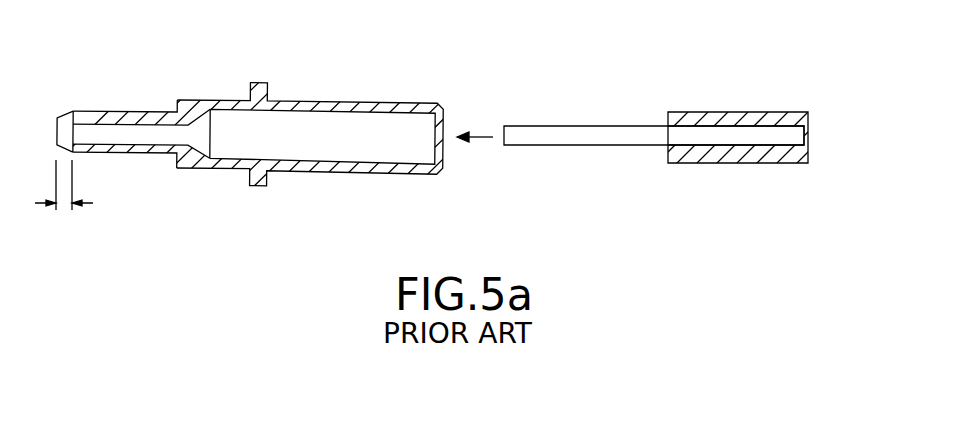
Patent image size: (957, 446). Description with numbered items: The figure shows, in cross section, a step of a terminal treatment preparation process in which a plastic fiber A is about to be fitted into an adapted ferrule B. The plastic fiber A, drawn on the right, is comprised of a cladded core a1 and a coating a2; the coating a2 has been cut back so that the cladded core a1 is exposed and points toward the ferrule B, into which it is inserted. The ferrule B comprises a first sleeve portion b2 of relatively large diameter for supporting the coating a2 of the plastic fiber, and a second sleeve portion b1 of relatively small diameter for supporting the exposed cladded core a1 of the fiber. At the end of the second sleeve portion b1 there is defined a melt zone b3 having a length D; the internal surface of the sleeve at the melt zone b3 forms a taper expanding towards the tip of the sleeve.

The ferrule B is at (478, 134).
The second sleeve portion b1 is at (145, 153).
The first sleeve portion b2 is at (386, 172).
The melt zone b3 is at (69, 106).
The plastic fiber A is at (478, 130).
The cladded core a1 is at (562, 145).
The coating a2 is at (703, 163).
The length of melt zone D is at (68, 185).